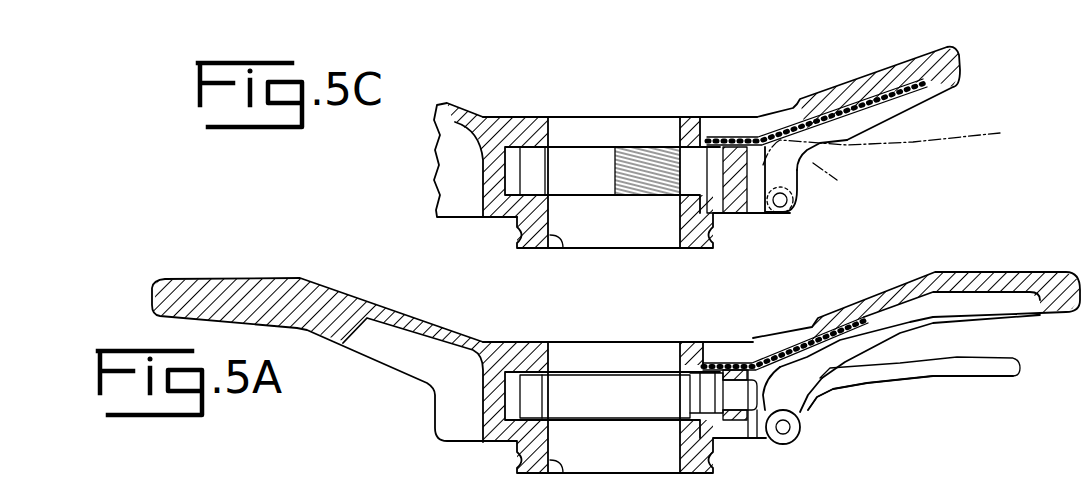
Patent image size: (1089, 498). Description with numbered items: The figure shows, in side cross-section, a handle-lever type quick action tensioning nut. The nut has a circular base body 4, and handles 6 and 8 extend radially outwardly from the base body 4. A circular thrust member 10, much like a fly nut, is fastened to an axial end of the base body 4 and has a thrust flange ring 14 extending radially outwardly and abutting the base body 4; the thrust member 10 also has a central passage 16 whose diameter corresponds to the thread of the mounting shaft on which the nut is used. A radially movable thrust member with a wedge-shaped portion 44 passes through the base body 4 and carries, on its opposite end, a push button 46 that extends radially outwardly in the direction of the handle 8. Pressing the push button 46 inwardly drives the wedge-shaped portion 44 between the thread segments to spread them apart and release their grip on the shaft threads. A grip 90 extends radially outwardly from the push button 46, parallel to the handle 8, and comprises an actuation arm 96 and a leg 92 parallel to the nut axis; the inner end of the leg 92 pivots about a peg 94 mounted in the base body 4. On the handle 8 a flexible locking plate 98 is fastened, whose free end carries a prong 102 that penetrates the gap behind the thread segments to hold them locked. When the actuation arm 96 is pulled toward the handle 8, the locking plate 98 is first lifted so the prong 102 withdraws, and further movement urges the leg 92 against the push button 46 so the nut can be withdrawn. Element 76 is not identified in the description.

In FIG. 5C, the base body 4 is at (740, 200).
In FIG. 5C, the handle 6 is at (463, 122).
In FIG. 5A, the handle 6 is at (325, 295).
In FIG. 5C, the handle 8 is at (950, 88).
In FIG. 5A, the handle 8 is at (1008, 318).
In FIG. 5C, the thrust member 10 is at (540, 245).
In FIG. 5A, the thrust member 10 is at (533, 477).
In FIG. 5C, the thrust flange ring 14 is at (510, 212).
In FIG. 5A, the thrust flange ring 14 is at (495, 438).
In FIG. 5A, the central passage 16 is at (565, 468).
In FIG. 5A, the wedge-shaped portion 44 is at (718, 450).
In FIG. 5A, the push button 46 is at (735, 400).
In FIG. 5C, the bearing 76 is at (565, 242).
In FIG. 5C, the grip 90 is at (815, 165).
In FIG. 5A, the grip 90 is at (823, 385).
In FIG. 5C, the leg 92 is at (797, 182).
In FIG. 5A, the leg 92 is at (807, 408).
In FIG. 5C, the peg 94 is at (788, 207).
In FIG. 5A, the peg 94 is at (790, 442).
In FIG. 5C, the actuation arm 96 is at (928, 145).
In FIG. 5A, the actuation arm 96 is at (925, 373).
In FIG. 5C, the flexible locking plate 98 is at (795, 108).
In FIG. 5A, the flexible locking plate 98 is at (800, 348).
In FIG. 5C, the prong 102 is at (720, 200).